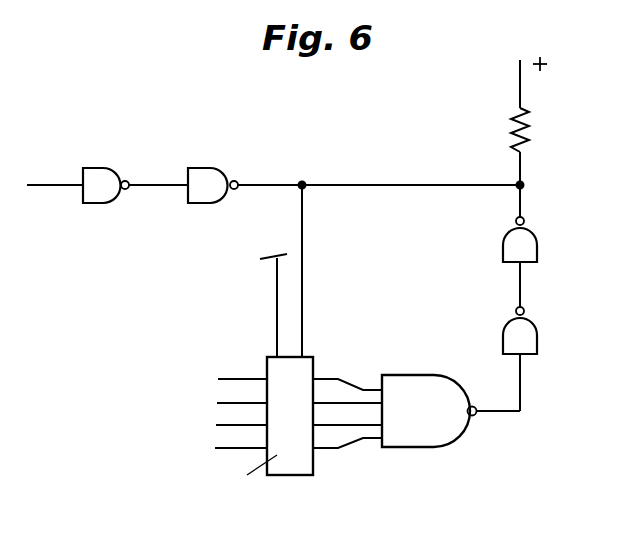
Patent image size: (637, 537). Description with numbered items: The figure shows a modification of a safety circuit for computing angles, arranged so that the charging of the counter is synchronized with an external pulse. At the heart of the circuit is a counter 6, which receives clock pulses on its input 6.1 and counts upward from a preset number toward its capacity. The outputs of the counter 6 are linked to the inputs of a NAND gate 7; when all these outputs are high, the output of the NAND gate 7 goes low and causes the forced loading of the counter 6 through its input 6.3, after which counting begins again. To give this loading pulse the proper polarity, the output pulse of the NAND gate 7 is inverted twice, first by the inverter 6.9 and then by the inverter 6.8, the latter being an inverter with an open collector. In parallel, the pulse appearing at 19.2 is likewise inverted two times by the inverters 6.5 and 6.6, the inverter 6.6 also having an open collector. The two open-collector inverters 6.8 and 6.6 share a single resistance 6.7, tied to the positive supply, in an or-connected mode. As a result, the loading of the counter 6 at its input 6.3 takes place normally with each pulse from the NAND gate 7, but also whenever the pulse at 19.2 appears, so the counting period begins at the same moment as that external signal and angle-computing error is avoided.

The pulse output 19.2 is at (55, 172).
The inverter 6.5 is at (103, 167).
The inverter 6.6 is at (209, 167).
The resistance 6.7 is at (554, 126).
The inverter 6.8 is at (537, 245).
The inverter 6.9 is at (537, 340).
The input 6.1 is at (275, 356).
The input 6.3 is at (313, 358).
The counter 6 is at (313, 470).
The NAND gate 7 is at (444, 448).